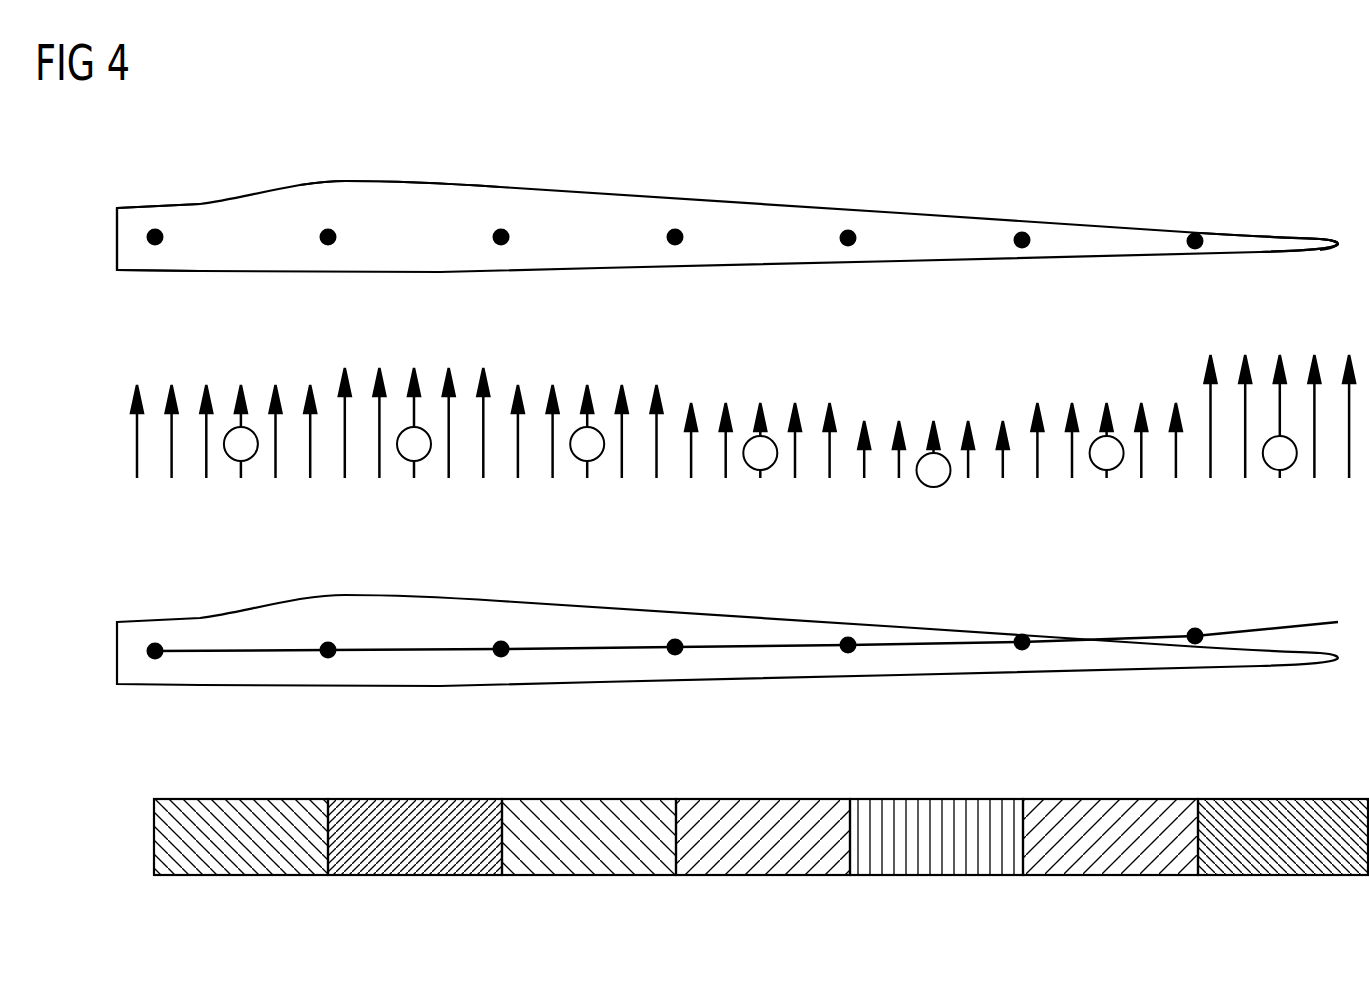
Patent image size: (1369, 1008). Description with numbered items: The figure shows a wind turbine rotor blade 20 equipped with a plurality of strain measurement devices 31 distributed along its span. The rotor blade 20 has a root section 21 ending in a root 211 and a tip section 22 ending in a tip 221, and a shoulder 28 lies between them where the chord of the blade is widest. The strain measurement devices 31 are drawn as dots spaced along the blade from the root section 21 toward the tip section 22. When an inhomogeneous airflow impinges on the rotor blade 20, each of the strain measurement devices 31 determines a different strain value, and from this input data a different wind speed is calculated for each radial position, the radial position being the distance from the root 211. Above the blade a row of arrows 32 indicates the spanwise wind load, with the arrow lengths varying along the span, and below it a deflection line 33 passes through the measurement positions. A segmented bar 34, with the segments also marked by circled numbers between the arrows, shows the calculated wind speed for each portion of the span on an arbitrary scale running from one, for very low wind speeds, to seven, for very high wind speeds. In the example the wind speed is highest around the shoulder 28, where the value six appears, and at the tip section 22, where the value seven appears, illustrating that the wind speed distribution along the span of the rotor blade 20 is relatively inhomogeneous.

The rotor blade 20 is at (738, 163).
The root section 21 is at (134, 253).
The root 211 is at (116, 239).
The tip section 22 is at (1296, 238).
The tip 221 is at (1337, 240).
The shoulder 28 is at (341, 181).
The strain measurement devices 31 is at (501, 230).
The wind load distribution arrows 32 is at (108, 443).
The deflection line of the blade 33 is at (708, 645).
The load level indicators / blade segments 34 is at (253, 456).